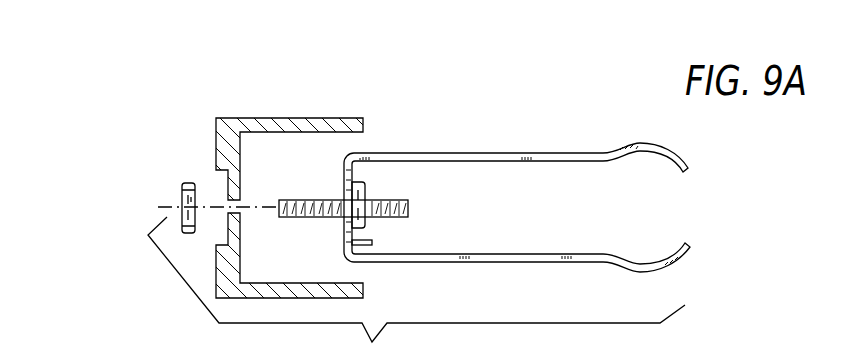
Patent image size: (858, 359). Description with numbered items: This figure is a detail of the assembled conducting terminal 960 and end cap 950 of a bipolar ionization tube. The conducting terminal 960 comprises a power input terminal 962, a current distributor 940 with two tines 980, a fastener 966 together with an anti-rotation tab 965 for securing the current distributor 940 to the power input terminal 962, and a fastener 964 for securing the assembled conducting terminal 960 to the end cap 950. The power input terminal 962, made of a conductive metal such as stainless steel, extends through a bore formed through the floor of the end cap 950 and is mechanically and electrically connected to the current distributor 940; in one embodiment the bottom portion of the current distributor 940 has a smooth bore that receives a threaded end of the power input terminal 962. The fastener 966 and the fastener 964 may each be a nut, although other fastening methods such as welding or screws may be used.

The current distributor 940 is at (457, 152).
The end cap 950 is at (291, 116).
The conducting terminal 960 is at (484, 153).
The power input terminal 962 is at (411, 205).
The fastener 964 is at (183, 182).
The anti-rotation tab 965 is at (375, 243).
The fastener 966 is at (367, 186).
The tines 980 is at (637, 152).